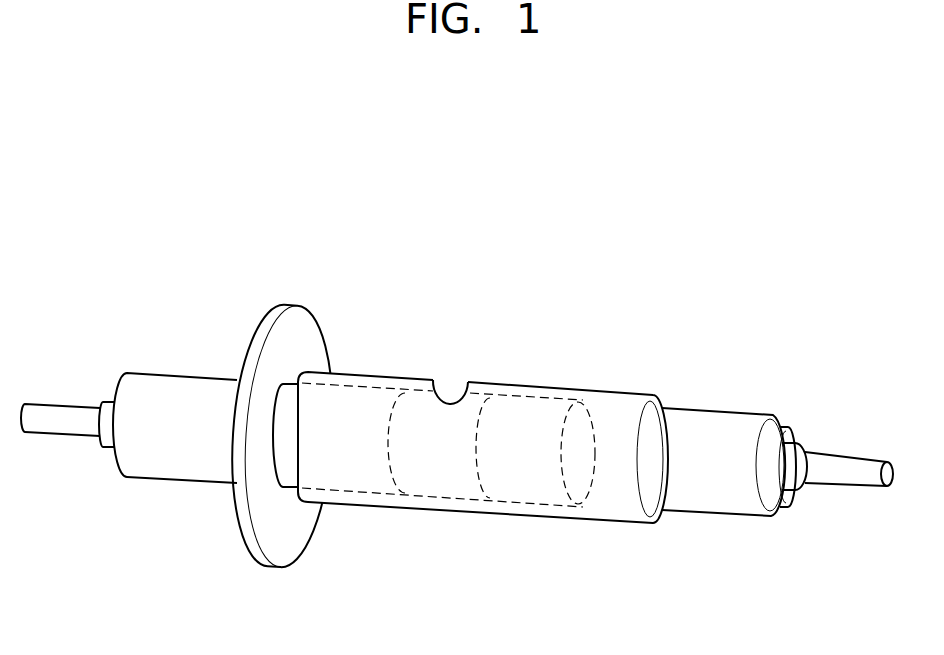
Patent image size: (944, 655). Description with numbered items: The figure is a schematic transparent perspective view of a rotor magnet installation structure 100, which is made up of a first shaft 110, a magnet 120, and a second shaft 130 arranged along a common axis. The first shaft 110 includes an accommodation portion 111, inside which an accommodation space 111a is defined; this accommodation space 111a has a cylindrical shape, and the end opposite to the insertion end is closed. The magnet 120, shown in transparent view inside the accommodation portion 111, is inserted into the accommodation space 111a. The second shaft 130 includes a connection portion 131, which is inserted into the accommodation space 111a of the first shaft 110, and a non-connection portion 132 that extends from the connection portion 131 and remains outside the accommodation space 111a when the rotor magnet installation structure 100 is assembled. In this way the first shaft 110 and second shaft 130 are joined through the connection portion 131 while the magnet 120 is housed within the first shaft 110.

The rotor magnet installation structure 100 is at (631, 249).
The first shaft 110 is at (708, 422).
The accommodation portion 111 is at (408, 380).
The accommodation space 111a is at (471, 392).
The magnet 120 is at (517, 482).
The second shaft 130 is at (380, 238).
The connection portion 131 is at (355, 390).
The non-connection portion 132 is at (168, 392).